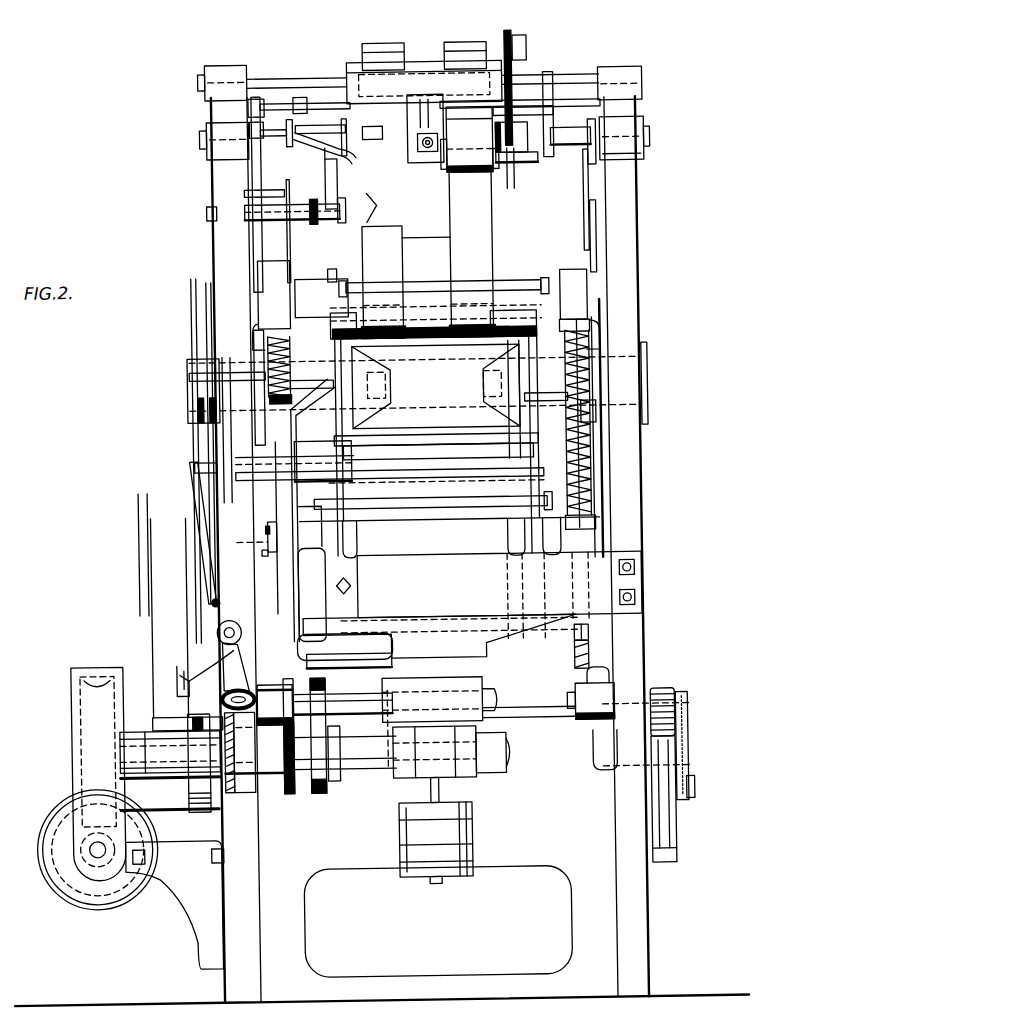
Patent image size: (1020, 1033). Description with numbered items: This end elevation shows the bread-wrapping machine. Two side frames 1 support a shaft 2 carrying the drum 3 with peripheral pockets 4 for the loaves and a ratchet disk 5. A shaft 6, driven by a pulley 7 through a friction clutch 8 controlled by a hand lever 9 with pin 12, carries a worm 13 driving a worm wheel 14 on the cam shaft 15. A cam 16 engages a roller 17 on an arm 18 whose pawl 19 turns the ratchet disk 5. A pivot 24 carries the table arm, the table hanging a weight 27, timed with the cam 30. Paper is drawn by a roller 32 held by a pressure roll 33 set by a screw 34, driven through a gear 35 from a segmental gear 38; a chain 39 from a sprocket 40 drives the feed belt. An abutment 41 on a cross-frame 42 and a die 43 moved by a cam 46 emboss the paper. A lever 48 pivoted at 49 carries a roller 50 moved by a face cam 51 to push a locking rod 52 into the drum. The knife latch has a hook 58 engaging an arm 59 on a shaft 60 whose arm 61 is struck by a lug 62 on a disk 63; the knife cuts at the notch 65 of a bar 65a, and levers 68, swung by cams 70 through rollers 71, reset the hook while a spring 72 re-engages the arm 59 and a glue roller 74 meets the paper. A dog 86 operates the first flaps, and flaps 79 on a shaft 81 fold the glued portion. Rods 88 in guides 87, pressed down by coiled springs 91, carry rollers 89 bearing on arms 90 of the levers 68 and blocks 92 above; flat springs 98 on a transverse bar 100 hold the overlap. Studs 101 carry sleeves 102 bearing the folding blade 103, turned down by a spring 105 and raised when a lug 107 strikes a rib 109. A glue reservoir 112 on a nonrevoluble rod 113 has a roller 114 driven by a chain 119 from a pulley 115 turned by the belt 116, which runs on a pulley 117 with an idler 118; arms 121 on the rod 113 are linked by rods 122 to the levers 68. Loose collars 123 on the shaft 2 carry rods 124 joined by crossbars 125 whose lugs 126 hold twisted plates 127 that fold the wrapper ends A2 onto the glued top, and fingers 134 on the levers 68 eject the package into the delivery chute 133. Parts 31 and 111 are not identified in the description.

The frame column 1 is at (374, 532).
The plate 2 is at (651, 382).
The slide frame 3 is at (414, 409).
The block 4 is at (407, 240).
The plate 5 is at (197, 338).
The crank disc 6 is at (80, 855).
The wheel 7 is at (36, 850).
The wheel hub 8 is at (97, 849).
The plate 9 is at (139, 604).
The base plate 12 is at (160, 714).
The crank pin 13 is at (95, 853).
The connecting rod 14 is at (86, 662).
The main shaft 15 is at (365, 768).
The flange 16 is at (196, 812).
The shaft 17 is at (185, 760).
The plate 18 is at (186, 620).
The plate 19 is at (224, 432).
The bearing 24 is at (436, 696).
The motor 27 is at (436, 830).
The pin 30 is at (288, 792).
The shaft 31 is at (342, 703).
The sleeve 32 is at (360, 727).
The plate 33 is at (390, 665).
The pin 34 is at (350, 585).
The roller 35 is at (658, 692).
The bracket 38 is at (672, 836).
The rack 39 is at (685, 714).
The block 40 is at (691, 790).
The cam 41 is at (437, 637).
The housing 42 is at (491, 596).
The block 43 is at (440, 723).
The gear box 46 is at (451, 751).
The lever 48 is at (198, 500).
The eye 49 is at (231, 618).
The bearing 50 is at (252, 686).
The post 51 is at (242, 752).
The pin 52 is at (196, 465).
The bar 58 is at (274, 518).
The stop 59 is at (265, 565).
The stop 60 is at (265, 540).
The arm 61 is at (210, 660).
The collar 62 is at (150, 782).
The bolt 63 is at (208, 830).
The bar 65 is at (428, 500).
The bar extension 65a is at (392, 517).
The link 68 is at (308, 578).
The pin 70 is at (320, 792).
The pin 71 is at (314, 792).
The pin 72 is at (212, 598).
The rod 74 is at (520, 500).
The bolt 79 is at (384, 124).
The bar 81 is at (334, 128).
The plate 86 is at (297, 145).
The spring hook 87 is at (256, 340).
The rod 88 is at (268, 374).
The screw 89 is at (572, 634).
The screw 90 is at (572, 657).
The spring 91 is at (270, 388).
The block 92 is at (655, 296).
The link 98 is at (362, 128).
The shaft 100 is at (290, 80).
The bolt 101 is at (211, 211).
The rod 102 is at (315, 222).
The block 103 is at (345, 222).
The rod 105 is at (312, 215).
The pin 107 is at (316, 276).
The arm 109 is at (353, 177).
The rod 111 is at (250, 191).
The housing 112 is at (424, 81).
The bearing 113 is at (656, 140).
The cylinder 114 is at (458, 44).
The bracket 115 is at (520, 172).
The bar 116 is at (427, 254).
The shaft 117 is at (418, 296).
The block 118 is at (469, 139).
The bar 119 is at (520, 44).
The bar 121 is at (556, 74).
The rod 122 is at (589, 212).
The clamp 123 is at (598, 415).
The block 124 is at (262, 270).
The rod 125 is at (577, 103).
The rod 126 is at (306, 98).
The tube 127 is at (362, 163).
The plate 133 is at (449, 425).
The block 134 is at (486, 374).
The angle A2 is at (363, 207).